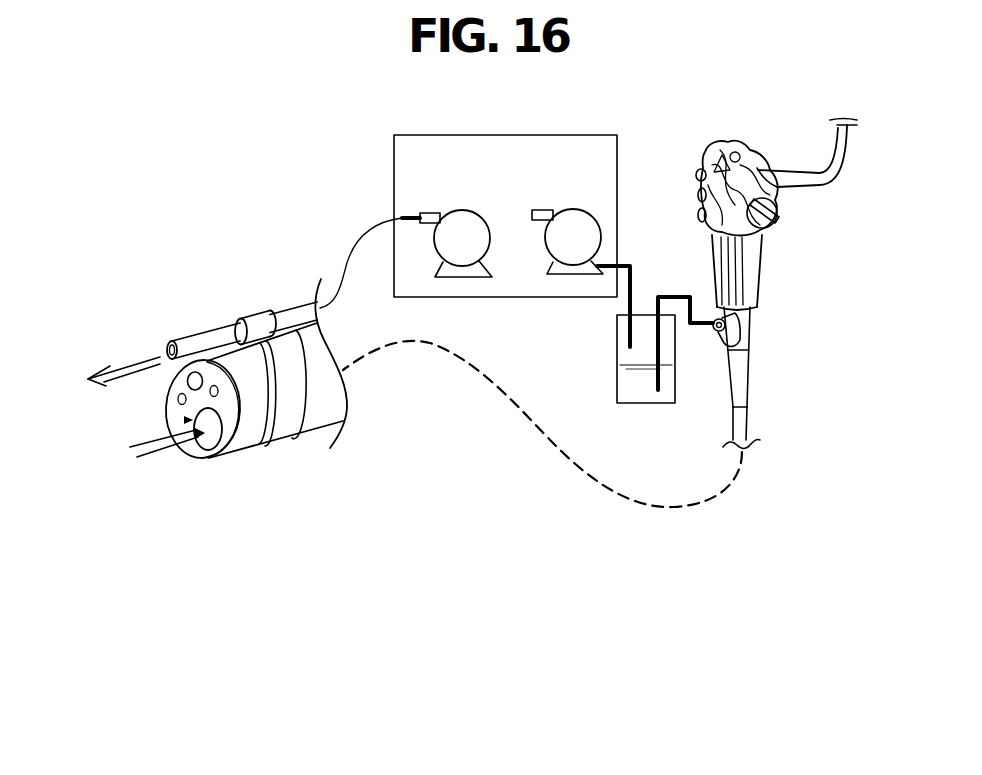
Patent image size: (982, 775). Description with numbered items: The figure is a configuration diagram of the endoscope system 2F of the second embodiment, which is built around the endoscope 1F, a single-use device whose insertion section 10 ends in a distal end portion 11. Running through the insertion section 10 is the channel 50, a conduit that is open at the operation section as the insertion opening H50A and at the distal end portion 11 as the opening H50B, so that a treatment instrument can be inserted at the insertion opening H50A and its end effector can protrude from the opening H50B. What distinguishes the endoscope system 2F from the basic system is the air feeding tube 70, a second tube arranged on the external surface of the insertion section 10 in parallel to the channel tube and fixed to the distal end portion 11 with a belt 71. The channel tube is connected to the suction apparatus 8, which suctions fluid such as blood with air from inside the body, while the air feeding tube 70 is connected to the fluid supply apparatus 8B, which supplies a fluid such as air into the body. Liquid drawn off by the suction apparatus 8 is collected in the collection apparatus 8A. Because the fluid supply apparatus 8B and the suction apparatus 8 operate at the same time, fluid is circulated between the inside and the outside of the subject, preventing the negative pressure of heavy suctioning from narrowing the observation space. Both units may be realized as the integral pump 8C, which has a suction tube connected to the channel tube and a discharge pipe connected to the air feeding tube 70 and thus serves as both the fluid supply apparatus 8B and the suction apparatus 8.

The endoscope system 2F is at (170, 160).
The endoscope 1F is at (760, 276).
The suction apparatus 8 is at (575, 210).
The collection apparatus 8A is at (637, 404).
The fluid supply apparatus 8B is at (455, 210).
The pump 8C is at (394, 157).
The insertion section 10 is at (282, 367).
The distal end portion 11 is at (231, 460).
The channel 50 is at (523, 413).
The air feeding tube 70 is at (200, 332).
The belt 71 is at (241, 318).
The insertion opening H50A is at (732, 324).
The opening H50B is at (185, 420).